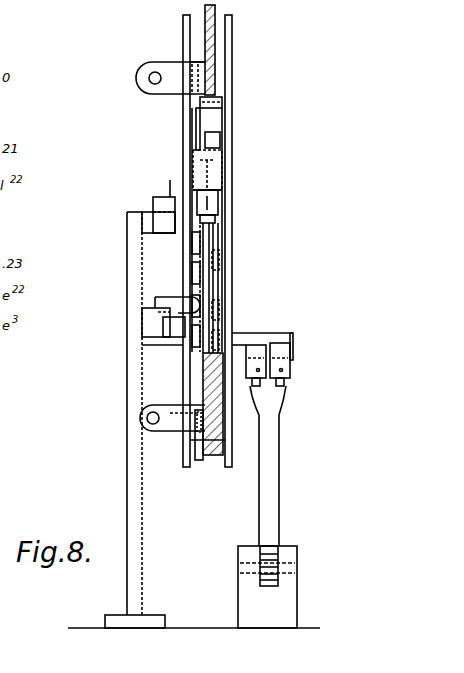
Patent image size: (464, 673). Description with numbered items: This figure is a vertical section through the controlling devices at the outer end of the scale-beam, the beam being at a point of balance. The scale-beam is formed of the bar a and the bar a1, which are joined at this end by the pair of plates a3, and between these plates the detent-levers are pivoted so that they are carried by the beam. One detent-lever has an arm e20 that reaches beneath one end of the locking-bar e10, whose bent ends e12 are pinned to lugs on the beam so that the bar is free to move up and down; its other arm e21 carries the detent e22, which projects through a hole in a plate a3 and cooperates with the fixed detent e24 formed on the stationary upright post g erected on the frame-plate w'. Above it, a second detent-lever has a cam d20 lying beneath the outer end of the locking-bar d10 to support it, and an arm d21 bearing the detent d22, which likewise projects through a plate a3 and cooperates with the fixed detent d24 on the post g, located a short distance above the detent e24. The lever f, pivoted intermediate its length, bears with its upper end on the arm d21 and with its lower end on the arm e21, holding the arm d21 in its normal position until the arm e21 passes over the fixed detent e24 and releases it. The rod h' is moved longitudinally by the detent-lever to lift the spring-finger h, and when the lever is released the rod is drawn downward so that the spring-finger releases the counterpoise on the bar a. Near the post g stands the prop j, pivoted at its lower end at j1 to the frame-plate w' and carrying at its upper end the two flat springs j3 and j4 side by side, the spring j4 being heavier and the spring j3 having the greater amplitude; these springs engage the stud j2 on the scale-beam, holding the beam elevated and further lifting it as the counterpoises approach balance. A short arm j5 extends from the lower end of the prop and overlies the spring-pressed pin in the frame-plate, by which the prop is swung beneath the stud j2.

The locking-bar d10 is at (205, 32).
The cam d20 is at (222, 101).
The detent-carrying arm d21 is at (200, 128).
The detent d22 is at (156, 206).
The fixed detent d24 is at (150, 222).
The lever f is at (220, 140).
The spring-finger h is at (230, 199).
The scale-beam bar a is at (222, 218).
The rod h' is at (235, 288).
The detent e22 is at (158, 302).
The fixed detent e24 is at (145, 333).
The detent-carrying arm e21 is at (200, 364).
The scale-beam bar a1 is at (206, 390).
The locking-bar e10 is at (142, 420).
The bent ends e12 is at (175, 412).
The arm e20 is at (148, 412).
The plates a3 is at (195, 445).
The upright post g is at (127, 476).
The prop j is at (270, 402).
The pivot j1 is at (240, 575).
The stud j2 is at (293, 340).
The spring j3 is at (280, 343).
The spring j4 is at (254, 345).
The short arm j5 is at (262, 588).
The frame-plate w' is at (194, 647).